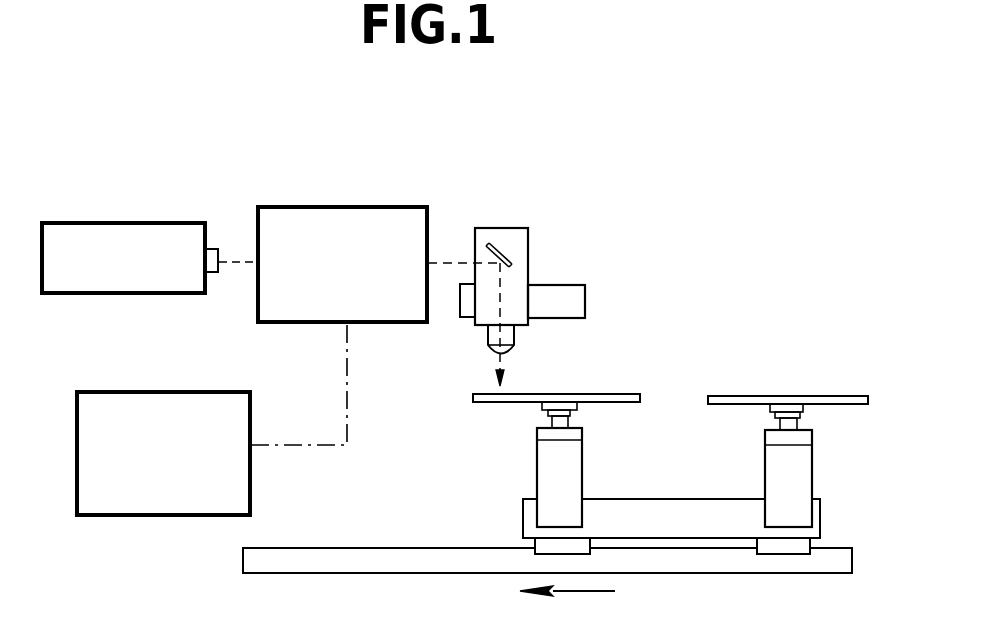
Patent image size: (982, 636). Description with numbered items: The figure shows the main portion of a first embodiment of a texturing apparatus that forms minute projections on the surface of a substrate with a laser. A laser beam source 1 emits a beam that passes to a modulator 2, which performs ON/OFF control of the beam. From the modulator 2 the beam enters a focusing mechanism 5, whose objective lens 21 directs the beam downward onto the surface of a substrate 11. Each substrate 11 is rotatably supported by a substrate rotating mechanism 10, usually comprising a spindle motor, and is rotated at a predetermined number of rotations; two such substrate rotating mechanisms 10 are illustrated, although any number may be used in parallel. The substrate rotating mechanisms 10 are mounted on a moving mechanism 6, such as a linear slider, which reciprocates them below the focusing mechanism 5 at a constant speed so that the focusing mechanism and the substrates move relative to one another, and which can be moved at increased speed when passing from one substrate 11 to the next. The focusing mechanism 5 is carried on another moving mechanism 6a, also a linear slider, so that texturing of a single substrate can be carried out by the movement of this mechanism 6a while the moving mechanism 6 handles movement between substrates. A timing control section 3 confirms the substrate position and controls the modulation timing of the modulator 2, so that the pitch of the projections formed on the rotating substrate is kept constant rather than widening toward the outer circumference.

The laser beam source 1 is at (127, 223).
The modulator 2 is at (328, 207).
The timing control section 3 is at (160, 392).
The focusing mechanism 5 is at (509, 228).
The moving mechanism 6a is at (577, 285).
The objective lens 21 is at (493, 352).
The substrate 11 is at (617, 393).
The substrate rotating mechanism 10 is at (574, 459).
The moving mechanism 6 is at (385, 548).